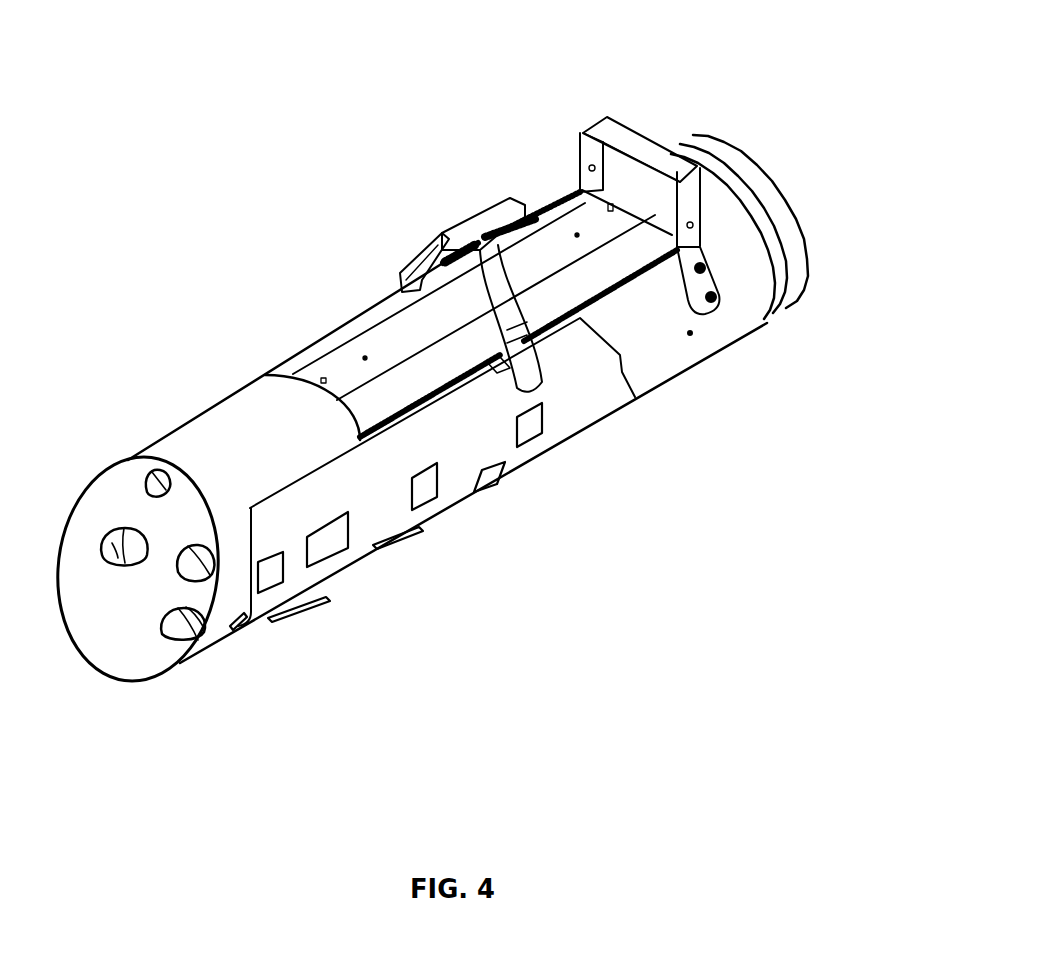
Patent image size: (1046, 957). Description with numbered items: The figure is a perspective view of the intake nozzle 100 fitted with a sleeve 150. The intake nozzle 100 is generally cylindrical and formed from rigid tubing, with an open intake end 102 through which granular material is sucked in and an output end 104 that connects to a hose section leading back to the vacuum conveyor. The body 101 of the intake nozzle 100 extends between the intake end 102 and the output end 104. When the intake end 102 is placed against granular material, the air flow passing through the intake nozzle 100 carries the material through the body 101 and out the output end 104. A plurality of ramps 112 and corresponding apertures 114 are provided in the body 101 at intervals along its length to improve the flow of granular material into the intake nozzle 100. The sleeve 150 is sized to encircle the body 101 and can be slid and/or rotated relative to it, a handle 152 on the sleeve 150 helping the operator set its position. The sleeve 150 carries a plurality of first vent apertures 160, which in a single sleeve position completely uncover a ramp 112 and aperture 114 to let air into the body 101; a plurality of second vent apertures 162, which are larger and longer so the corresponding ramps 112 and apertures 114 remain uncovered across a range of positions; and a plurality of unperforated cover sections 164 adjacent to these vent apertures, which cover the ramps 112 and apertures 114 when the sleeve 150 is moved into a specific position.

The intake nozzle 100 is at (386, 126).
The body 101 is at (270, 420).
The intake end 102 is at (115, 672).
The output end 104 is at (785, 190).
The ramp 112 is at (108, 538).
The aperture 114 is at (133, 530).
The sleeve 150 is at (593, 400).
The handle 152 is at (620, 138).
The first vent aperture 160 is at (437, 500).
The second vent aperture 162 is at (300, 595).
The unperforated cover section 164 is at (345, 555).